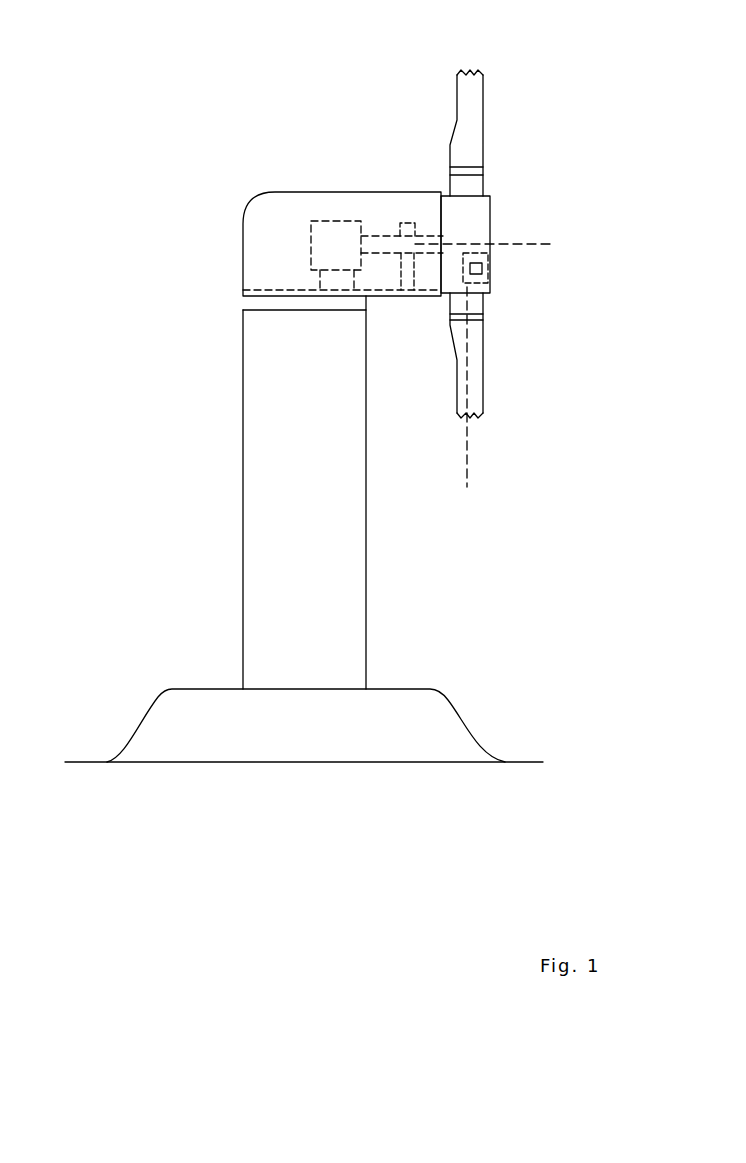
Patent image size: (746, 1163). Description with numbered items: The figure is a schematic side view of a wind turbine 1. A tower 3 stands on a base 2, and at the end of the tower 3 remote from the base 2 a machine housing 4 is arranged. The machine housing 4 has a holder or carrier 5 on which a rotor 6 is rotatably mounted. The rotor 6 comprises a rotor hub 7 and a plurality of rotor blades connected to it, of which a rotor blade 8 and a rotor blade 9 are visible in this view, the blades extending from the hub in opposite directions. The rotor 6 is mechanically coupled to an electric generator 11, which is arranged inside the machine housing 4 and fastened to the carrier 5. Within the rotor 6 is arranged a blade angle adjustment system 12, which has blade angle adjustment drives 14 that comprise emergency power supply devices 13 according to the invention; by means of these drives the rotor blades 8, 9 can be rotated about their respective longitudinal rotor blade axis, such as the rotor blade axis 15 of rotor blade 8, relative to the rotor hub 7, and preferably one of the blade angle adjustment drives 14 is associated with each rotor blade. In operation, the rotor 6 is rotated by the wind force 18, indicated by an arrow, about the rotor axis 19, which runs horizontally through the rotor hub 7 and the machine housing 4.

The wind turbine 1 is at (236, 70).
The base 2 is at (182, 703).
The tower 3 is at (255, 470).
The machine housing 4 is at (243, 252).
The holder (carrier) 5 is at (276, 290).
The rotor 6 is at (443, 312).
The rotor hub 7 is at (490, 210).
The rotor blade 8 is at (478, 388).
The rotor blade 9 is at (465, 97).
The electric generator 11 is at (333, 226).
The blade angle adjustment system 12 is at (486, 260).
The emergency power supply device 13 is at (479, 272).
The blade angle adjustment drive 14 is at (483, 172).
The rotor blade axis 15 is at (467, 460).
The wind force 18 is at (582, 126).
The rotor axis 19 is at (537, 246).